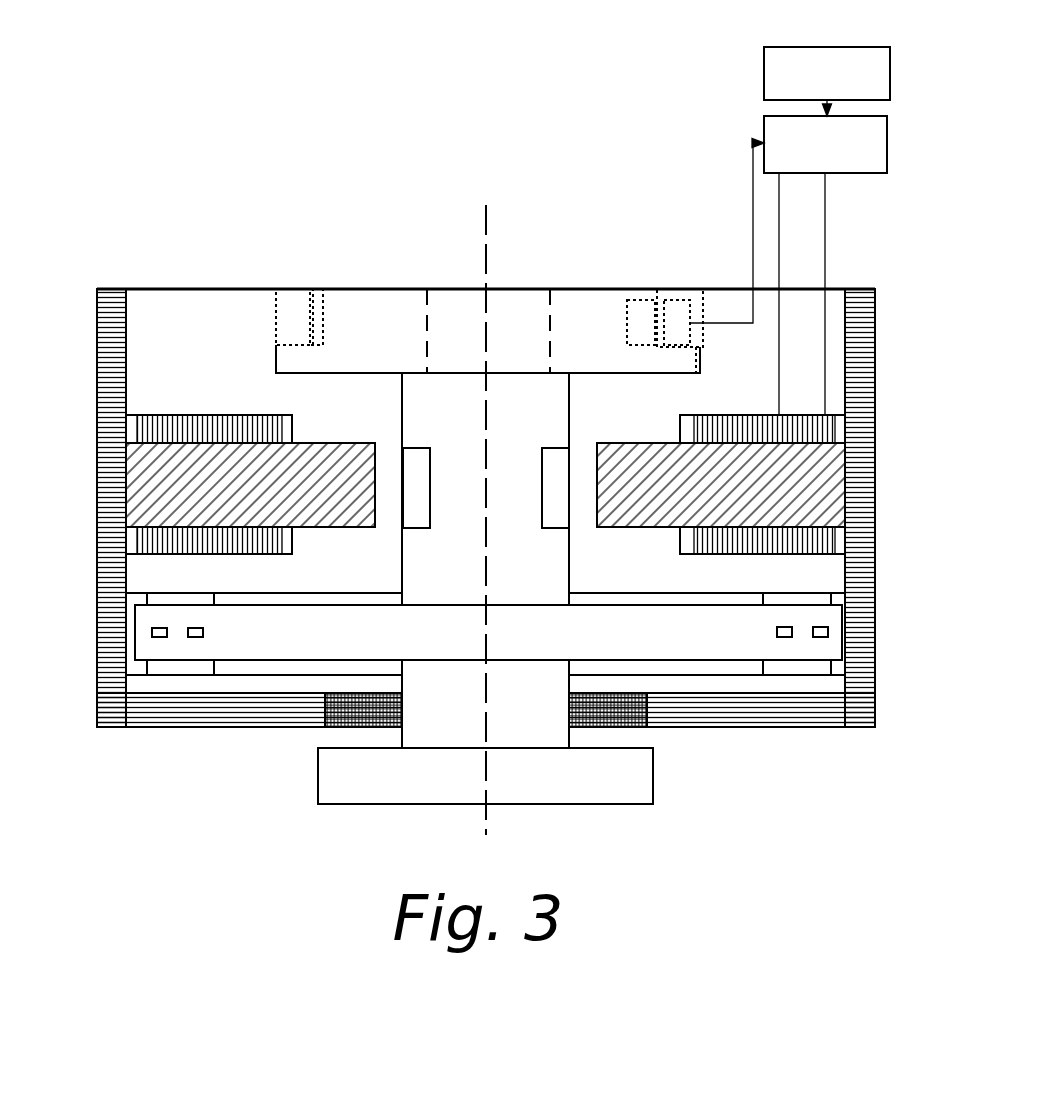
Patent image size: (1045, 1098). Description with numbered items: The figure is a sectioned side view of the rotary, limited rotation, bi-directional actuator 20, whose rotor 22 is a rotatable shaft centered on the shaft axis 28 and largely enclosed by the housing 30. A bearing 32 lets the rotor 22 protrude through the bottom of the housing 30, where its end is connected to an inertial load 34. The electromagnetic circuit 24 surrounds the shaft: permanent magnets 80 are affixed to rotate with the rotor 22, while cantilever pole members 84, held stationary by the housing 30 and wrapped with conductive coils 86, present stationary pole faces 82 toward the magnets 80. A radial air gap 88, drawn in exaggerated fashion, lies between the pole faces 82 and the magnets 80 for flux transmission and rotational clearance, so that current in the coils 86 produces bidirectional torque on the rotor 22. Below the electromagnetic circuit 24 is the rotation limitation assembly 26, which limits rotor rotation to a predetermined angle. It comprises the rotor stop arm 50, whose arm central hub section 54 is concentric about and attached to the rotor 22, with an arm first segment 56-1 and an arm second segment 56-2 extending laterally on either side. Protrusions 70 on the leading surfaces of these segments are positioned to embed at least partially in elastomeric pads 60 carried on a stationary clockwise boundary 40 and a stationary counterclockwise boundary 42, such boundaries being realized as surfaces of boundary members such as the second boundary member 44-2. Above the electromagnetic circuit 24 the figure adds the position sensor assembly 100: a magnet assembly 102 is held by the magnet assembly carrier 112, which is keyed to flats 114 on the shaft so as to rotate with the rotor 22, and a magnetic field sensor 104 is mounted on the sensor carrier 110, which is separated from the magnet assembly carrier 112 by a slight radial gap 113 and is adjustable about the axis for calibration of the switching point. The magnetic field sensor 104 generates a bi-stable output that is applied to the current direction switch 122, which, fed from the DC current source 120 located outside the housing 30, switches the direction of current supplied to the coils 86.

The actuator 20 is at (122, 236).
The rotor 22 is at (571, 398).
The electromagnetic circuit 24 is at (183, 362).
The rotation limitation assembly 26 is at (760, 578).
The shaft axis 28 is at (490, 284).
The housing 30 is at (864, 376).
The bearing 32 is at (647, 715).
The inertial load 34 is at (653, 775).
The stationary clockwise boundary 40 is at (292, 592).
The stationary counterclockwise boundary 42 is at (676, 596).
The second boundary member 44-2 is at (382, 592).
The rotor stop arm 50 is at (713, 637).
The arm central hub section 54 is at (541, 635).
The arm first segment 56-1 is at (276, 652).
The arm second segment 56-2 is at (652, 652).
The elastomeric pad 60 is at (178, 592).
The protrusion 70 is at (152, 632).
The permanent magnet 80 is at (417, 462).
The stationary pole face 82 is at (385, 470).
The cantilever pole member 84 is at (302, 458).
The conductive coil 86 is at (185, 416).
The radial air gap 88 is at (392, 472).
The position sensor assembly 100 is at (790, 209).
The magnet assembly 102 is at (641, 300).
The magnetic field sensor 104 is at (673, 300).
The sensor carrier 110 is at (286, 291).
The magnet assembly carrier 112 is at (371, 303).
The radial gap 113 is at (317, 290).
The flats 114 is at (427, 290).
The DC current source 120 is at (827, 47).
The current direction switch 122 is at (826, 176).